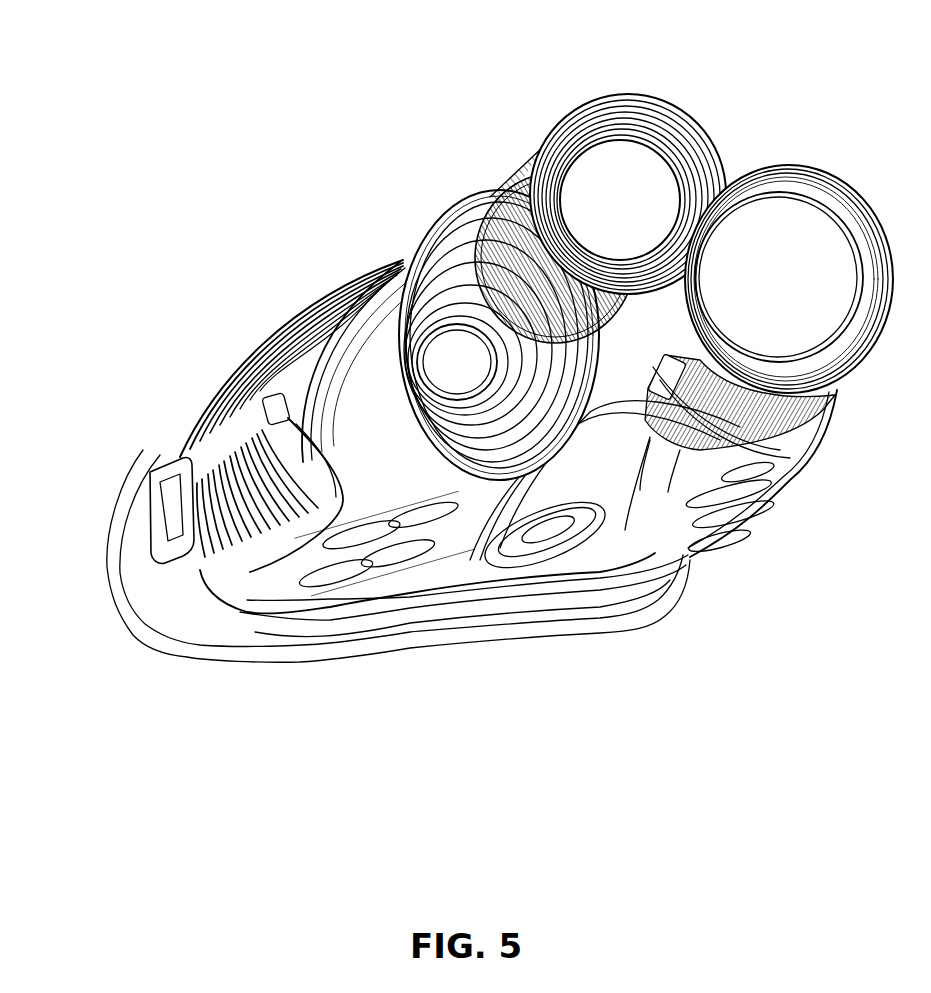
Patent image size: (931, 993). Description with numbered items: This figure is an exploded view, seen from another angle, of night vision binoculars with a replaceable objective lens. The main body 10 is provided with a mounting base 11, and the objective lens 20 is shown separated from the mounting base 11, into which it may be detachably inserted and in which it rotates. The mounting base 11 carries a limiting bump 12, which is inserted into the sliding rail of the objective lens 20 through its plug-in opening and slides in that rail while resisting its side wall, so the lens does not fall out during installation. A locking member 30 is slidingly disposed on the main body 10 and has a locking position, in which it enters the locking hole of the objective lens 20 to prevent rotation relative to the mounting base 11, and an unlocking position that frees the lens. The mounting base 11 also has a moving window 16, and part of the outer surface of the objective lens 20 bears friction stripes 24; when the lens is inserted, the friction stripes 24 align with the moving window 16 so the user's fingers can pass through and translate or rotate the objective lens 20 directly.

The main body 10 is at (300, 600).
The mounting base 11 is at (367, 367).
The limiting bump 12 is at (491, 198).
The moving window 16 is at (390, 280).
The objective lens 20 is at (623, 180).
The friction stripes 24 is at (650, 296).
The locking member 30 is at (403, 253).